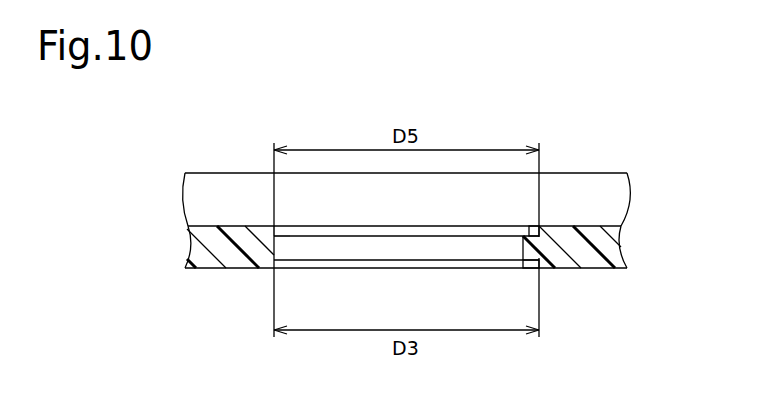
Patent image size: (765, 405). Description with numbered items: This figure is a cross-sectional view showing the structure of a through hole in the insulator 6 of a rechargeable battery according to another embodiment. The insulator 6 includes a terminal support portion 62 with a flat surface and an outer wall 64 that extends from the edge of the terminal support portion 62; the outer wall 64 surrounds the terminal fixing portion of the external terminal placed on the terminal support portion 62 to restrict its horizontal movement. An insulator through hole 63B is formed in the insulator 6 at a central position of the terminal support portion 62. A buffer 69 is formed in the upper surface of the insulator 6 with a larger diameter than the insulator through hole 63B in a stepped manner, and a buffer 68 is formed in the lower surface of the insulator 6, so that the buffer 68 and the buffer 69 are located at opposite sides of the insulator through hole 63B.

The insulator 6 is at (189, 143).
The outer wall 64 is at (627, 198).
The terminal support portion 62 is at (617, 255).
The buffer 69 is at (533, 232).
The buffer 68 is at (531, 265).
The insulator through hole 63B is at (286, 236).